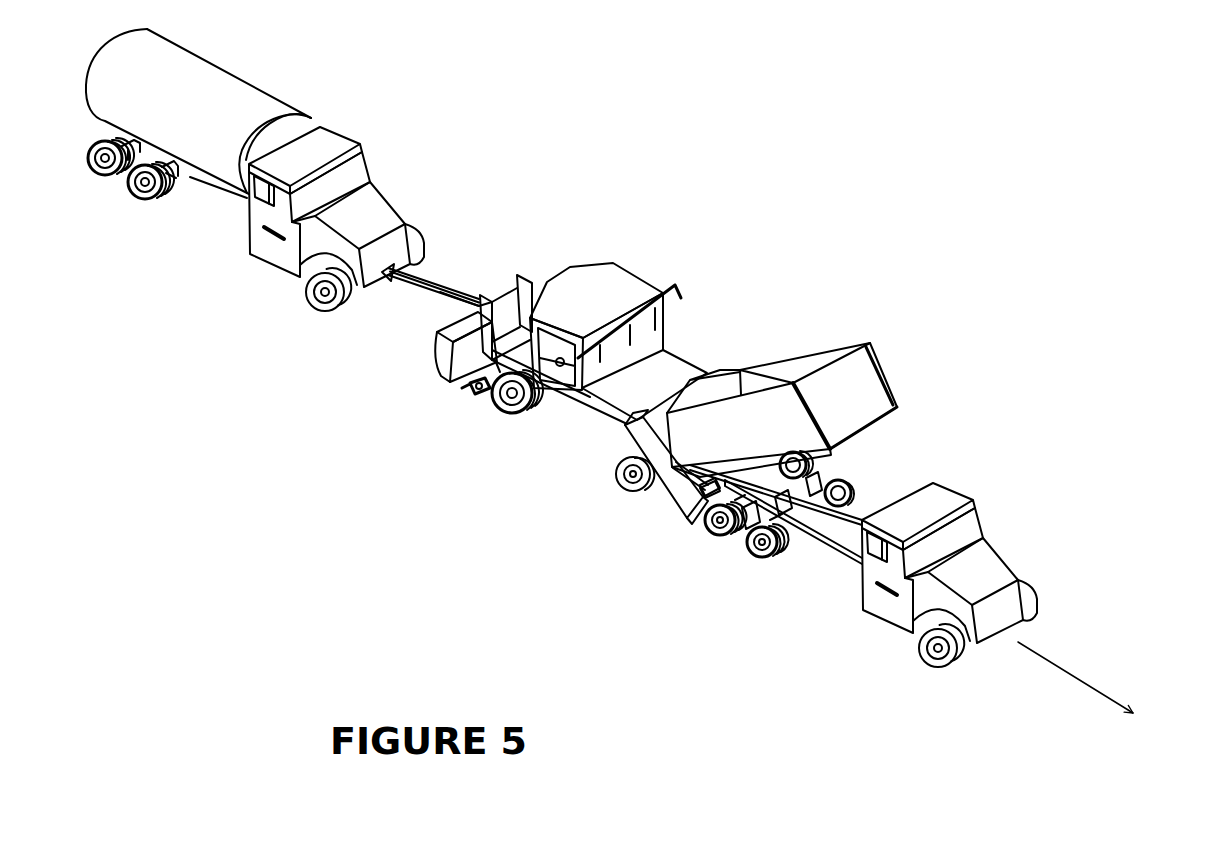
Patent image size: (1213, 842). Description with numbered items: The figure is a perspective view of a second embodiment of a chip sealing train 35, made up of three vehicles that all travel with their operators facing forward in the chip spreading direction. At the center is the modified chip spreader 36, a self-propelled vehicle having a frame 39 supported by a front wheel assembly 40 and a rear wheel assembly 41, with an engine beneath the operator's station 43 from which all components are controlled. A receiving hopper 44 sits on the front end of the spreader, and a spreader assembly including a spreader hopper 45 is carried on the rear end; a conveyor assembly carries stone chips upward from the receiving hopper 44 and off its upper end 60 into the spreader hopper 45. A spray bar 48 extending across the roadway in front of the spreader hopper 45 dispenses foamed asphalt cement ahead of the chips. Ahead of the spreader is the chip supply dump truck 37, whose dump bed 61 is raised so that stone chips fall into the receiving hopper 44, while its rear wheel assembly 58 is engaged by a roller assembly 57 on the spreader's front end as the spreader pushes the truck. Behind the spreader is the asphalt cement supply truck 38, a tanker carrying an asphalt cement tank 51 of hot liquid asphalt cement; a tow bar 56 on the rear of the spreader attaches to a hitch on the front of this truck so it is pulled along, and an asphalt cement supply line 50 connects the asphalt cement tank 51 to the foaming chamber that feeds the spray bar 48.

The chip sealing train 35 is at (783, 97).
The modified chip spreader 36 is at (663, 268).
The chip supply dump truck 37 is at (977, 462).
The asphalt cement supply truck 38 is at (348, 123).
The frame 39 is at (563, 395).
The front wheel assembly 40 is at (635, 495).
The rear wheel assembly 41 is at (505, 413).
The operator's station 43 is at (607, 288).
The receiving hopper 44 is at (628, 430).
The spreader hopper 45 is at (433, 367).
The spray bar 48 is at (468, 397).
The asphalt cement supply line 50 is at (433, 277).
The asphalt cement tank 51 is at (240, 98).
The tow bar 56 is at (425, 308).
The roller assembly 57 is at (697, 533).
The rear wheel assembly 58 is at (727, 550).
The upper end 60 is at (510, 303).
The dump bed 61 is at (817, 343).